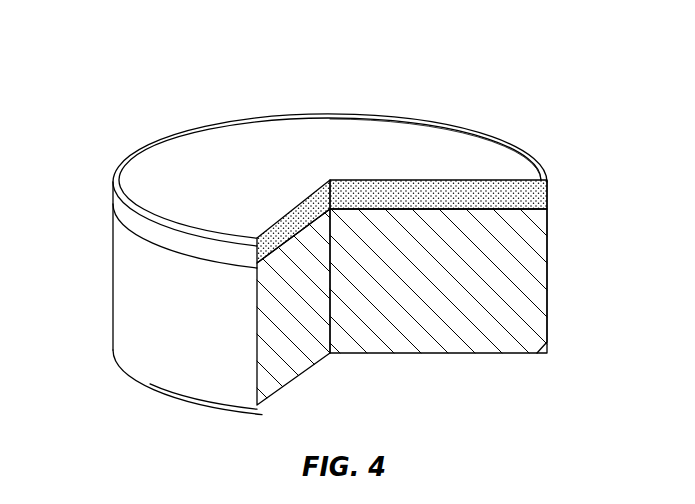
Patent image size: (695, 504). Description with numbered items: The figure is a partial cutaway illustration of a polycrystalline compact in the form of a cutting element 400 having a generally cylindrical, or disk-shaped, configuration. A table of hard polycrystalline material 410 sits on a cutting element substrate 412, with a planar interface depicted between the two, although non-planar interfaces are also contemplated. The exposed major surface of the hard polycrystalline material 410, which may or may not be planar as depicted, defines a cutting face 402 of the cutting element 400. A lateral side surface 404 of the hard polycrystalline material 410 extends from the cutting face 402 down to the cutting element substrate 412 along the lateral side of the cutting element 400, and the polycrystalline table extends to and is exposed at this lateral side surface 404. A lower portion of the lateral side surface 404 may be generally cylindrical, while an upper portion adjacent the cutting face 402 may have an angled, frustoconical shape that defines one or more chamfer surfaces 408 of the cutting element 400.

The cutting element 400 is at (168, 79).
The cutting face 402 is at (408, 146).
The lateral side surface 404 is at (538, 200).
The chamfer surface 408 is at (117, 190).
The hard polycrystalline material 410 is at (487, 153).
The cutting element substrate 412 is at (518, 267).